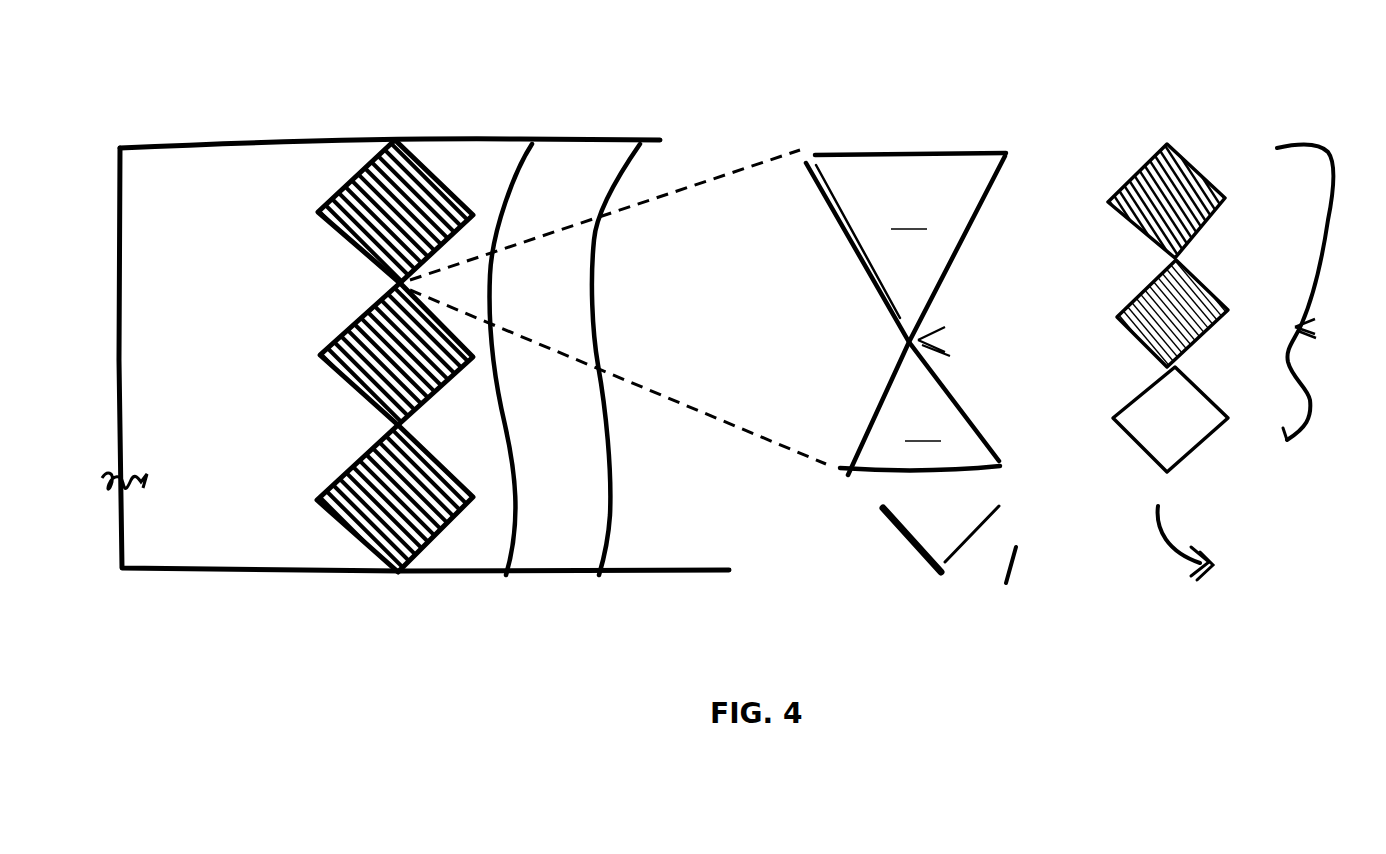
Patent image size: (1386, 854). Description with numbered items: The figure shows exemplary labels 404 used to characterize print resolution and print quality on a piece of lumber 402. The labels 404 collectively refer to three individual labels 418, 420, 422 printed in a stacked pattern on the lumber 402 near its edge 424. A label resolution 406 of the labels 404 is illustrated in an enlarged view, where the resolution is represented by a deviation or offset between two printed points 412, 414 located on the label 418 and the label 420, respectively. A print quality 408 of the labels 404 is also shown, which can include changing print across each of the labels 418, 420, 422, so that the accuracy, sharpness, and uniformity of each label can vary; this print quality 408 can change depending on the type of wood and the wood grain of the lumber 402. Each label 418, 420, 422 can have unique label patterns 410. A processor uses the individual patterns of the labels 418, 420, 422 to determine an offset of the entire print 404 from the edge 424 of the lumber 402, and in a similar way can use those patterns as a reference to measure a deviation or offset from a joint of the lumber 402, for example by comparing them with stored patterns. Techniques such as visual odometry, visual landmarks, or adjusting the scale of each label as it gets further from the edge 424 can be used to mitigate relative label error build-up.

The lumber 402 is at (240, 104).
The labels 404 is at (765, 333).
The label resolution 406 is at (911, 368).
The print quality 408 is at (1323, 292).
The label patterns 410 is at (1232, 543).
The printed point 412 is at (880, 316).
The printed point 414 is at (898, 360).
The label 418 is at (318, 212).
The label 420 is at (320, 355).
The label 422 is at (317, 500).
The edge 424 is at (350, 137).